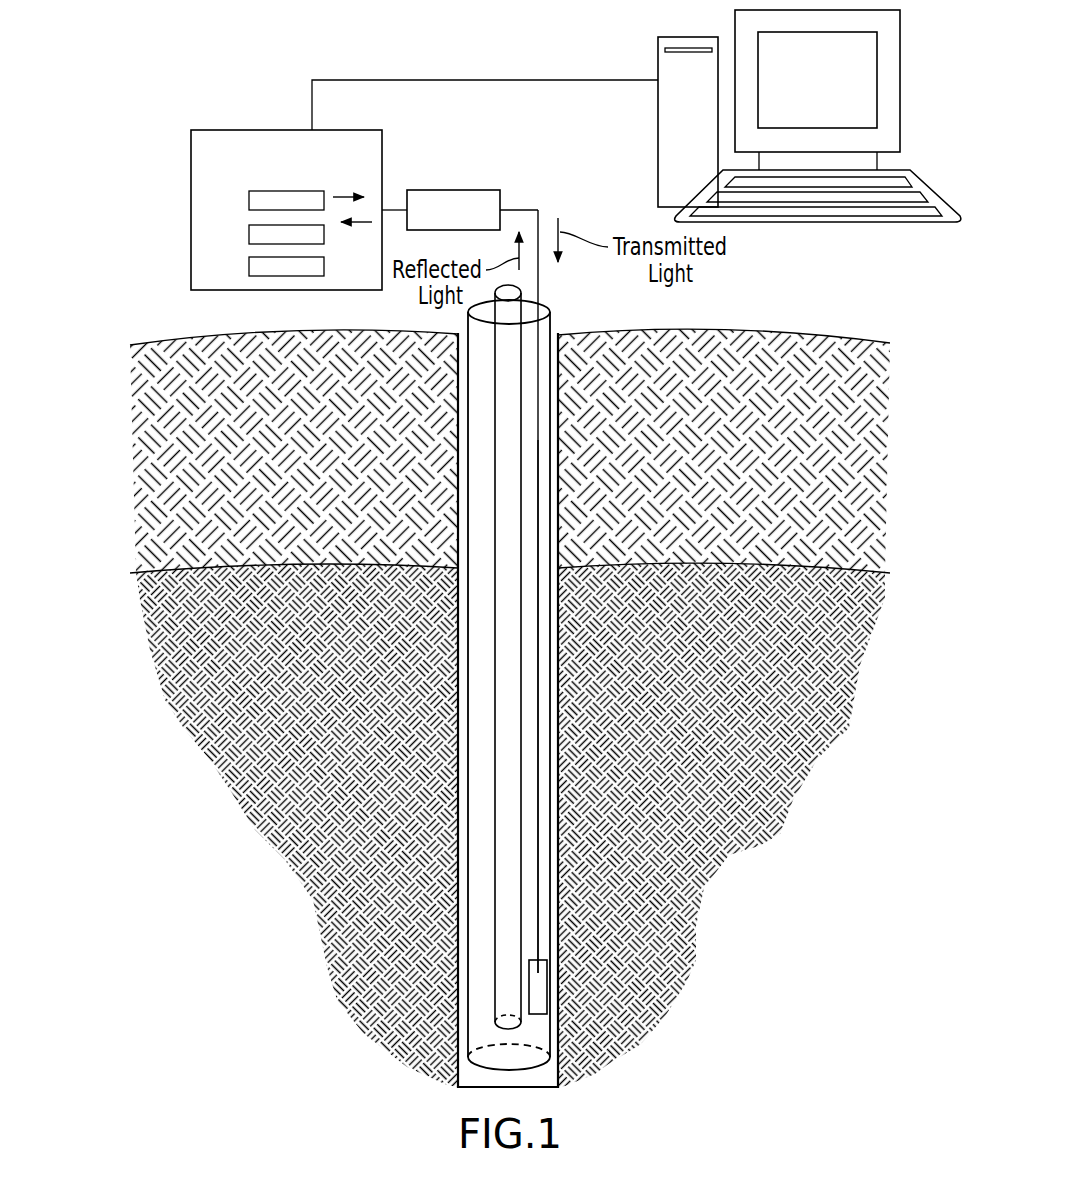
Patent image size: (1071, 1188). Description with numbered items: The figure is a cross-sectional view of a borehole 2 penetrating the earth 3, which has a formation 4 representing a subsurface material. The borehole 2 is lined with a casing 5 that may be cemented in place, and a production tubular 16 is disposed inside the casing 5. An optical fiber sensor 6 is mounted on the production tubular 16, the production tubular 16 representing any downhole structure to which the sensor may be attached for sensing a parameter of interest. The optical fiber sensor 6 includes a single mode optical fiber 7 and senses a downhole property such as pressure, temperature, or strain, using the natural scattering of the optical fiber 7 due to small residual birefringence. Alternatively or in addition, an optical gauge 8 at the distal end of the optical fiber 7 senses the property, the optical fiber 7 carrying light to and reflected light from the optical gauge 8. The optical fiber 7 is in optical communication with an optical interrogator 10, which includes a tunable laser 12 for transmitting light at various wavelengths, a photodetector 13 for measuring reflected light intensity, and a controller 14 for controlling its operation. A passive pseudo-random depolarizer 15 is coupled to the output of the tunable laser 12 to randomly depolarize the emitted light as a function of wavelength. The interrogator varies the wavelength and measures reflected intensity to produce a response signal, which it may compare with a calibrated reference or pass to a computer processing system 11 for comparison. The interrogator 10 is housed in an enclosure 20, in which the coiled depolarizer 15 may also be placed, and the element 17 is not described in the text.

The borehole 2 is at (562, 378).
The earth 3 is at (273, 377).
The formation 4 is at (273, 610).
The casing 5 is at (550, 322).
The optical fiber sensor 6 is at (538, 432).
The single mode optical fiber 7 is at (538, 490).
The optical gauge 8 is at (538, 988).
The optical interrogator 10 is at (383, 152).
The computer processing system 11 is at (658, 56).
The tunable laser 12 is at (255, 200).
The photodetector 13 is at (255, 233).
The controller 14 is at (255, 266).
The passive pseudo-random depolarizer 15 is at (477, 190).
The production tubular 16 is at (497, 462).
The enclosure wall 17 is at (191, 280).
The enclosure 20 is at (191, 274).